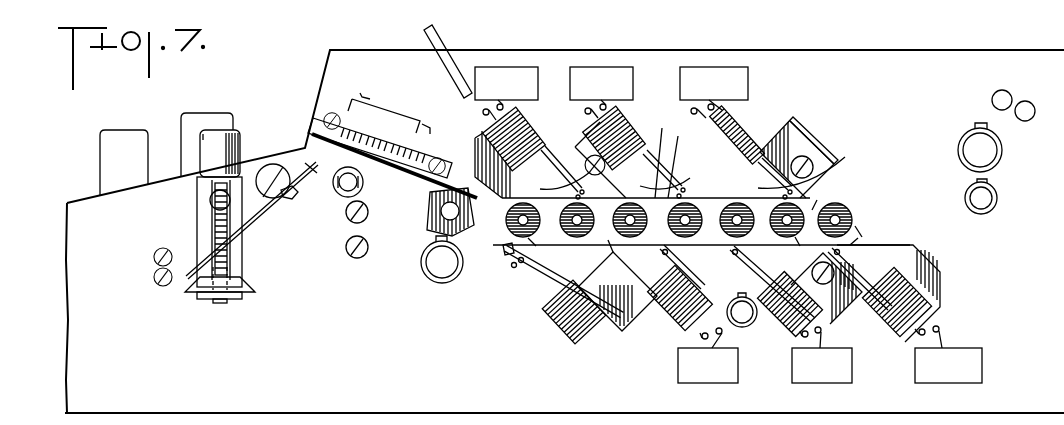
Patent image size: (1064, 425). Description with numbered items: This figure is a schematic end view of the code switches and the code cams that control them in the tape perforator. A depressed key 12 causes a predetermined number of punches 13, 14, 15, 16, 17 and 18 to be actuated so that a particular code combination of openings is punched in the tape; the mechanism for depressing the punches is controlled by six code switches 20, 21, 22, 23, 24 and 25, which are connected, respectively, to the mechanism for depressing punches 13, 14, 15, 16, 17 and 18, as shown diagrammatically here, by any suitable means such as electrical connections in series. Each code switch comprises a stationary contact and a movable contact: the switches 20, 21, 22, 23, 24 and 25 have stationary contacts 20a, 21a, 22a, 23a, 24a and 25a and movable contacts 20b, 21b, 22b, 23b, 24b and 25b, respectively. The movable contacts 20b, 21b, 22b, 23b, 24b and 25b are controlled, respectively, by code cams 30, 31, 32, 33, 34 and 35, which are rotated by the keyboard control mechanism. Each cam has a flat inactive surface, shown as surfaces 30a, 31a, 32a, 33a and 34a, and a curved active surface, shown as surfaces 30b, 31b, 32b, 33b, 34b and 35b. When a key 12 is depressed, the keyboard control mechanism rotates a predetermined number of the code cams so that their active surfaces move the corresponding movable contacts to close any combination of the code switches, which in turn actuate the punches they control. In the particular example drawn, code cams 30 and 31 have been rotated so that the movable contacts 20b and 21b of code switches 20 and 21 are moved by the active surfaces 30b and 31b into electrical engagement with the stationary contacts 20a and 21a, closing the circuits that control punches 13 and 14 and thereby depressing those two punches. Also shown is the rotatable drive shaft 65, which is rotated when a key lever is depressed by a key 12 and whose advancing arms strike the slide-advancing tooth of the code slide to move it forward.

The key 12 is at (107, 160).
The punch 13 is at (506, 93).
The punch 14 is at (708, 355).
The punch 15 is at (601, 92).
The punch 16 is at (822, 355).
The punch 17 is at (714, 92).
The punch 18 is at (948, 354).
The code switch 20 is at (482, 137).
The stationary contact 20a is at (568, 158).
The movable contact 20b is at (573, 192).
The code switch 21 is at (678, 324).
The stationary contact 21a is at (616, 283).
The movable contact 21b is at (644, 252).
The code switch 22 is at (636, 122).
The stationary contact 22a is at (675, 176).
The movable contact 22b is at (685, 184).
The code switch 23 is at (790, 332).
The stationary contact 23a is at (740, 330).
The movable contact 23b is at (703, 272).
The code switch 24 is at (733, 130).
The stationary contact 24a is at (803, 140).
The movable contact 24b is at (845, 157).
The code switch 25 is at (888, 341).
The stationary contact 25a is at (850, 260).
The movable contact 25b is at (850, 245).
The code cam 30 is at (560, 240).
The flat inactive surface 30a is at (583, 207).
The curved active surface 30b is at (547, 246).
The code cam 31 is at (630, 203).
The flat inactive surface 31a is at (618, 262).
The curved active surface 31b is at (625, 150).
The code cam 32 is at (674, 152).
The flat inactive surface 32a is at (745, 160).
The curved active surface 32b is at (680, 232).
The code cam 33 is at (745, 142).
The flat inactive surface 33a is at (720, 248).
The curved active surface 33b is at (772, 185).
The code cam 34 is at (775, 245).
The flat inactive surface 34a is at (817, 200).
The curved active surface 34b is at (795, 245).
The code cam 35 is at (862, 196).
The curved active surface 35b is at (860, 206).
The rotatable drive shaft 65 is at (447, 207).